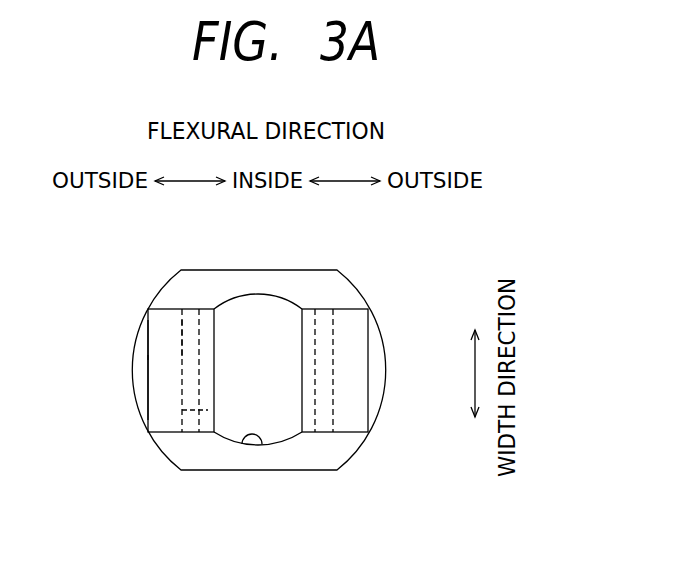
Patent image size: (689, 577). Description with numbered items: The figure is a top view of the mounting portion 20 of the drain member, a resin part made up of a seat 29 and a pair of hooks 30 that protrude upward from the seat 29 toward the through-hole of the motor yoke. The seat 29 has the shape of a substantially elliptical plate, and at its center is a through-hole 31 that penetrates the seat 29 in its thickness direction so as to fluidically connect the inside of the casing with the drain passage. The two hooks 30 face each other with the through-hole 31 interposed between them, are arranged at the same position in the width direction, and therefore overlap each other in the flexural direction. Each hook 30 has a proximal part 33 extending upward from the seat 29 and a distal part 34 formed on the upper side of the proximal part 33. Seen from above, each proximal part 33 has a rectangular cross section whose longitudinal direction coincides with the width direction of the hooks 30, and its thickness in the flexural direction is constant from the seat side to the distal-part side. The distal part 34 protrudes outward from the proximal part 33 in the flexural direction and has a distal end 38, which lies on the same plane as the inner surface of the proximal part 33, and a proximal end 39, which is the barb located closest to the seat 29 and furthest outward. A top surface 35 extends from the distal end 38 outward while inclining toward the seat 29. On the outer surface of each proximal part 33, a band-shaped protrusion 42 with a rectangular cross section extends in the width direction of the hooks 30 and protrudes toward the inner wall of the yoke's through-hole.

The mounting portion 20 is at (442, 263).
The seat 29 is at (340, 452).
The hooks 30 is at (165, 312).
The through-hole 31 is at (242, 444).
The proximal part 33 is at (182, 412).
The distal part 34 is at (160, 395).
The top surface 35 is at (158, 370).
The distal end 38 is at (215, 352).
The proximal end 39 is at (147, 341).
The protrusion 42 is at (178, 340).